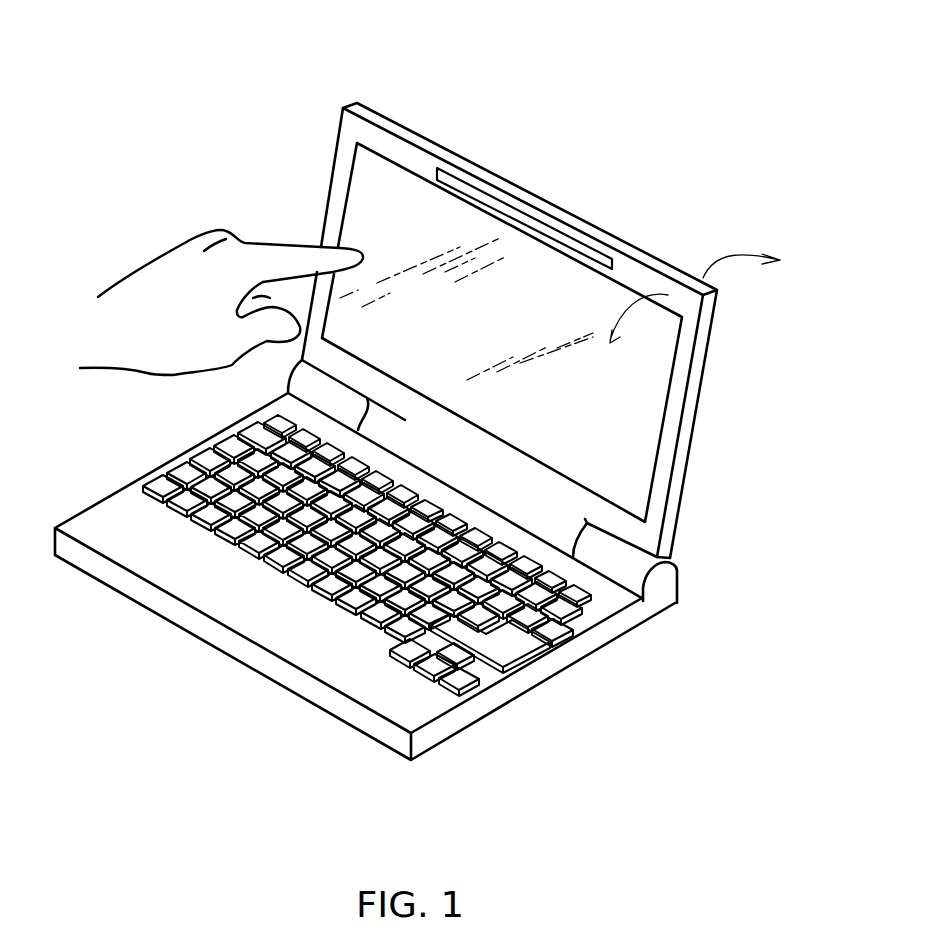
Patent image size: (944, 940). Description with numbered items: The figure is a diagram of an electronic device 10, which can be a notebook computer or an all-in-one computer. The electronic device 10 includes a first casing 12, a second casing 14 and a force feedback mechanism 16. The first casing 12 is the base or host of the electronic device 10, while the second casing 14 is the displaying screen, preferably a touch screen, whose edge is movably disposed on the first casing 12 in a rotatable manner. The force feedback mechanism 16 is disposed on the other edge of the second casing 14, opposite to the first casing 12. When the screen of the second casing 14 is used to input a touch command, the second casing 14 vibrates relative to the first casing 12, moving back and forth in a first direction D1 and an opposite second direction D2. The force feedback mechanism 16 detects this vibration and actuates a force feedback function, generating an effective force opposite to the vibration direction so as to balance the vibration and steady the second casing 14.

The electronic device 10 is at (210, 90).
The first casing 12 is at (203, 572).
The second casing 14 is at (687, 440).
The force feedback mechanism 16 is at (539, 226).
The first direction D1 is at (639, 323).
The second direction D2 is at (741, 251).